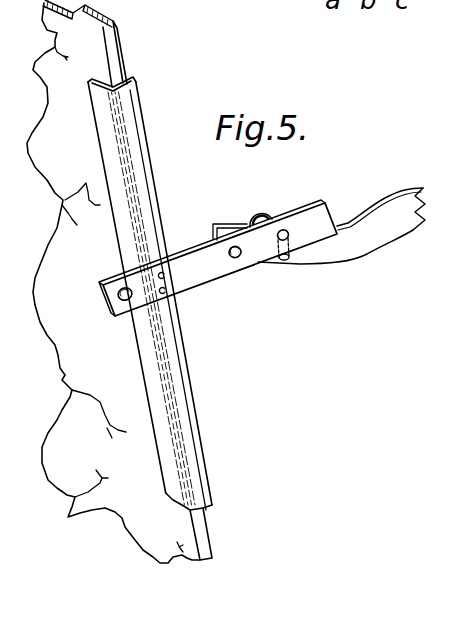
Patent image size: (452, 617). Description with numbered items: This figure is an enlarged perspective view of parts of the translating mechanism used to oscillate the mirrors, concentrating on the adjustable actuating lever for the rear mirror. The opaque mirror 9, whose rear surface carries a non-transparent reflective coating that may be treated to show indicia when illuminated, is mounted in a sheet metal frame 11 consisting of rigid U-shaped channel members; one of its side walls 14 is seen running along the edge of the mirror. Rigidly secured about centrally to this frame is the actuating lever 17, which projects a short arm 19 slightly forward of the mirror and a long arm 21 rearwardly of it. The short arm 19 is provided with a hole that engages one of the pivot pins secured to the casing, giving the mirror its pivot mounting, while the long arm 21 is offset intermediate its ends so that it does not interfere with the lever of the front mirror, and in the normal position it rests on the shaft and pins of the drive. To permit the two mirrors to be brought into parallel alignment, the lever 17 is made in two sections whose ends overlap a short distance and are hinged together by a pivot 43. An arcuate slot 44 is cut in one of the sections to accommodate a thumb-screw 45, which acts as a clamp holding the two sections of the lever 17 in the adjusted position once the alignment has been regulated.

The opaque mirror 9 is at (62, 245).
The sheet metal frame 11 is at (170, 290).
The side wall 14 is at (170, 400).
The actuating lever 17 is at (212, 266).
The short arm 19 is at (108, 320).
The long arm 21 is at (378, 228).
The pivot 43 is at (236, 258).
The arcuate slot 44 is at (287, 258).
The thumb-screw 45 is at (263, 208).